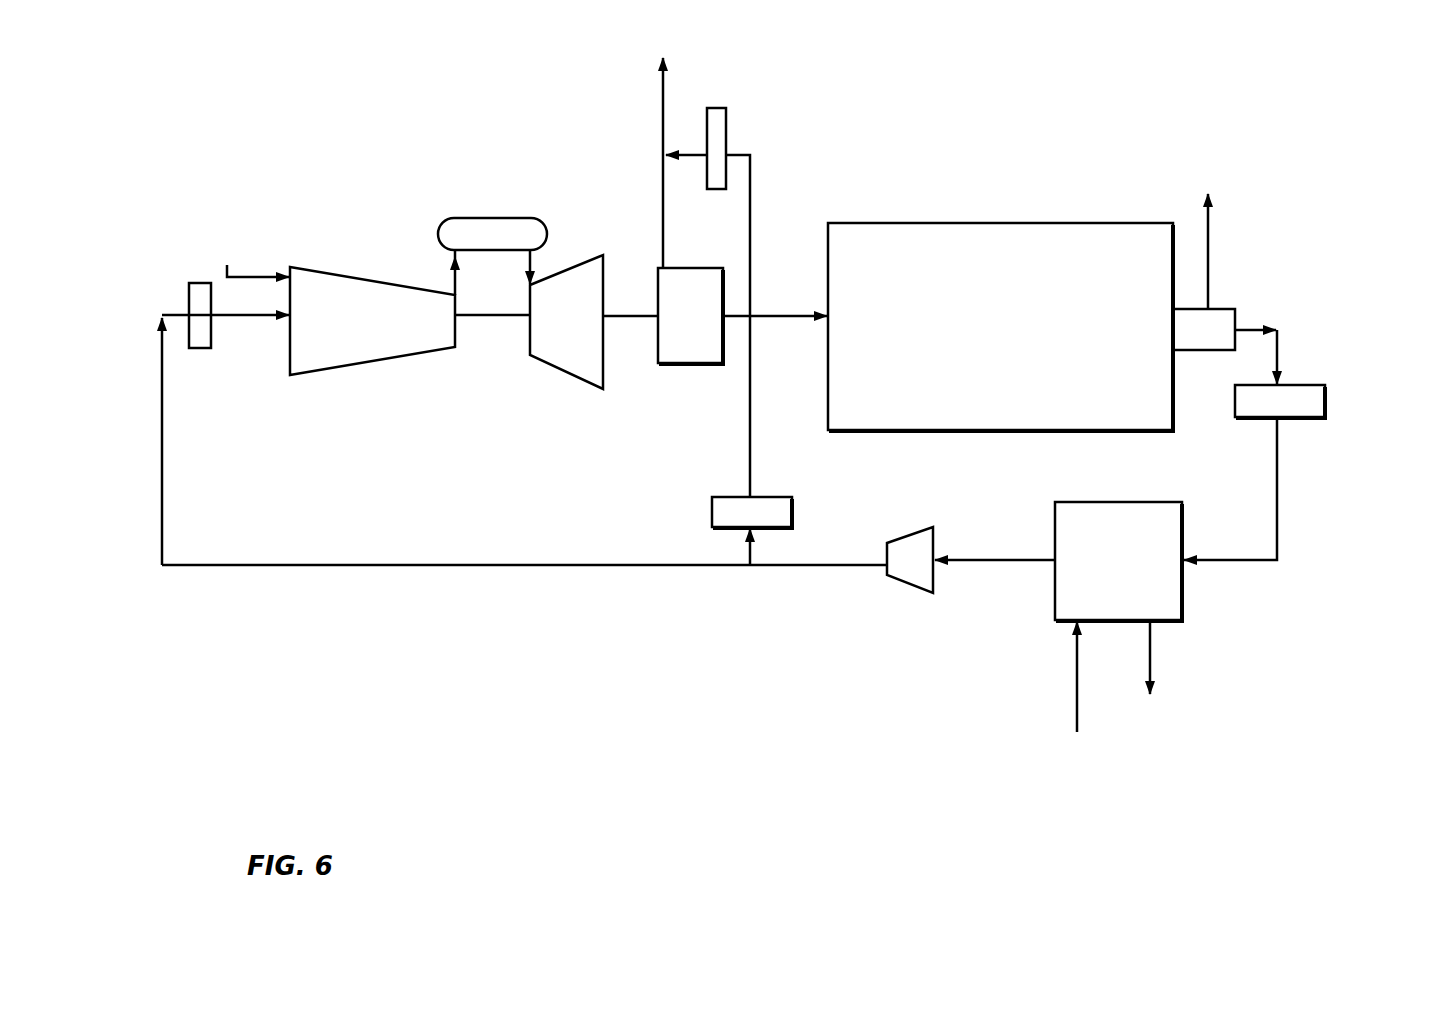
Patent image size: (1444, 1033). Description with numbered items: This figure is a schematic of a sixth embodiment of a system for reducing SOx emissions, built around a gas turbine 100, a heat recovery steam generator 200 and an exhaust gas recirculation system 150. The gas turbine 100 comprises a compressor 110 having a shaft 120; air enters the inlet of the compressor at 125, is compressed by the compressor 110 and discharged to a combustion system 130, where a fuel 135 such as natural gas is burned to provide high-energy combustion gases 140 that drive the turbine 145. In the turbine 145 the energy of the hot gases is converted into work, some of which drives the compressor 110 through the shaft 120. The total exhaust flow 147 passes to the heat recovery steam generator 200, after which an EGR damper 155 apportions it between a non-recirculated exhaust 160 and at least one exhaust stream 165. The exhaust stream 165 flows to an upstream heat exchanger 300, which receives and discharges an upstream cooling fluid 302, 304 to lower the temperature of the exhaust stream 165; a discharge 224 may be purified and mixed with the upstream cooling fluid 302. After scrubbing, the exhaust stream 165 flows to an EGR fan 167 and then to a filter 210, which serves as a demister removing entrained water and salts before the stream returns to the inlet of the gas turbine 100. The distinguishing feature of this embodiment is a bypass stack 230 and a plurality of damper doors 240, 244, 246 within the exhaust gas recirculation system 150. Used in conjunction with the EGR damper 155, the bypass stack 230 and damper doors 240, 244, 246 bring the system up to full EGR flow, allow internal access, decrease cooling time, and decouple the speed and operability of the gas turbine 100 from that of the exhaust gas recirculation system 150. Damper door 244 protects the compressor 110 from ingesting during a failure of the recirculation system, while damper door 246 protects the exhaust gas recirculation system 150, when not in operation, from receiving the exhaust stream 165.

The gas turbine 100 is at (203, 208).
The compressor 110 is at (323, 337).
The shaft 120 is at (492, 316).
The compressor inlet 125 is at (452, 290).
The combustion system 130 is at (498, 218).
The fuel 135 is at (435, 217).
The combustion gases 140 is at (535, 265).
The turbine 145 is at (543, 337).
The total exhaust flow 147 is at (633, 317).
The exhaust gas recirculation system 150 is at (1260, 707).
The EGR damper 155 is at (1180, 345).
The non-recirculated exhaust 160 is at (1210, 234).
The exhaust stream 165 is at (162, 463).
The EGR fan 167 is at (898, 580).
The heat recovery steam generator 200 is at (949, 343).
The filter 210 is at (189, 290).
The discharge 224 is at (1050, 787).
The bypass stack 230 is at (666, 330).
The damper door 240 is at (726, 128).
The damper door 244 is at (792, 505).
The damper door 246 is at (1325, 398).
The upstream heat exchanger 300 is at (1093, 573).
The upstream cooling fluid 302 is at (1077, 675).
The upstream cooling fluid 304 is at (1152, 676).